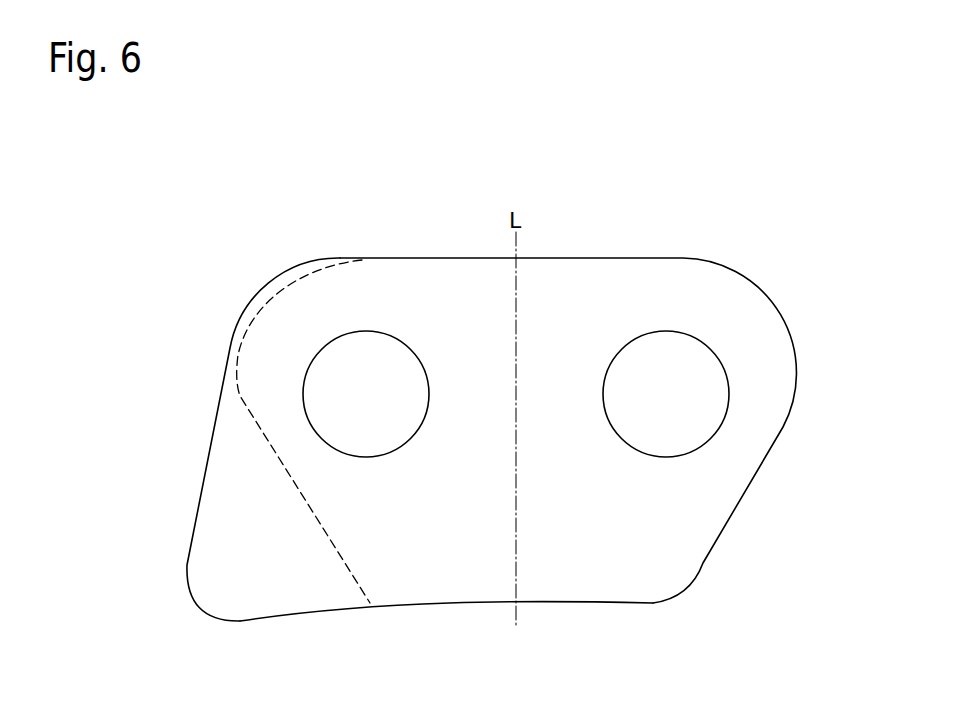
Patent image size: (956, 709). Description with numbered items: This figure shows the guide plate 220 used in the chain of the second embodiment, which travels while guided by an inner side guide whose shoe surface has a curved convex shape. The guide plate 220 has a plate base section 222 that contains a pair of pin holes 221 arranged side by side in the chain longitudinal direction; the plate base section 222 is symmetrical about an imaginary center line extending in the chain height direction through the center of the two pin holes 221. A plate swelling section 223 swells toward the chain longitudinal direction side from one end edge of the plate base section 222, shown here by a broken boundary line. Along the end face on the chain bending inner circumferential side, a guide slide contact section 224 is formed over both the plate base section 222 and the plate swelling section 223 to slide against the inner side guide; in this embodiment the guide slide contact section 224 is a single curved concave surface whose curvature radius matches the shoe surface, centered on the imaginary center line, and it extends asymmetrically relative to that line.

The guide plate 220 is at (122, 212).
The pin holes 221 is at (366, 339).
The plate base section 222 is at (635, 517).
The plate swelling section 223 is at (218, 540).
The guide slide contact section 224 is at (663, 607).